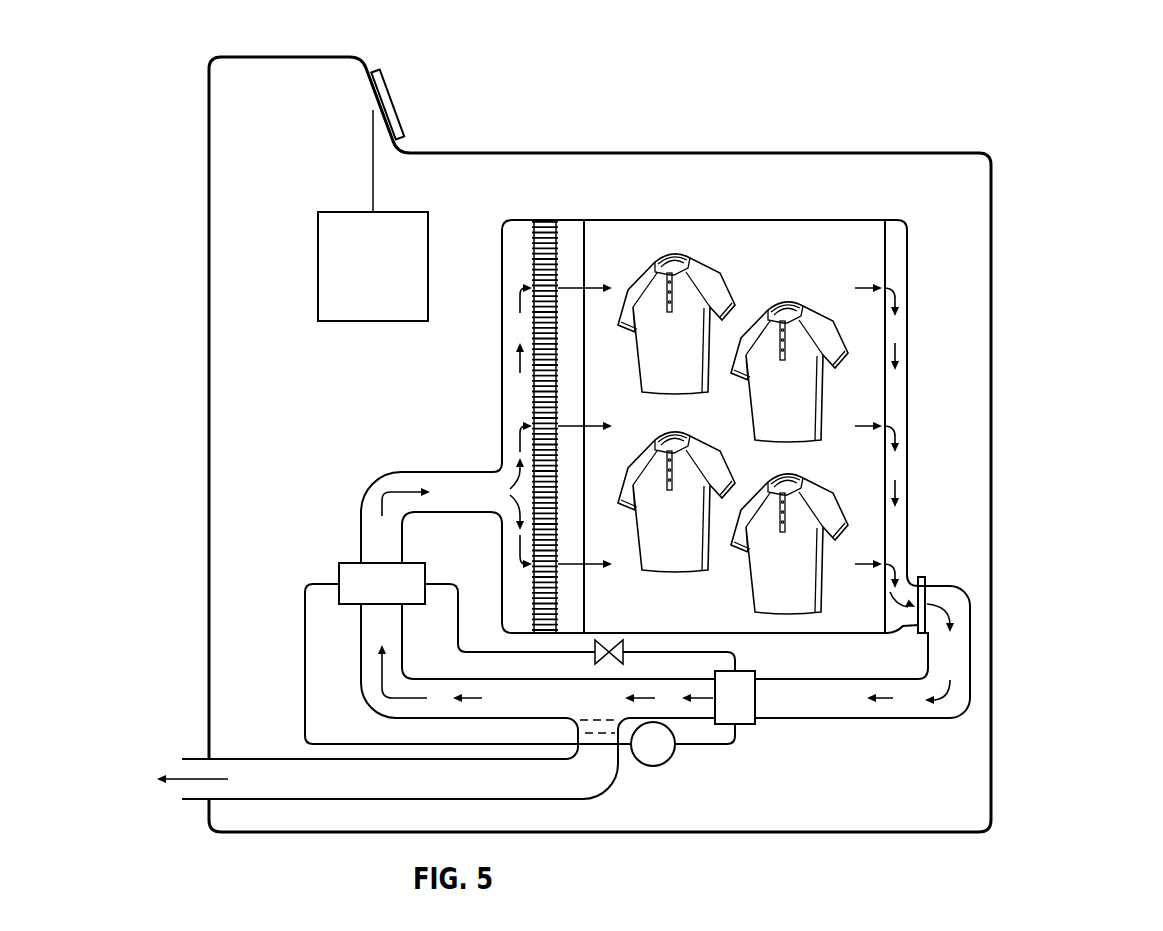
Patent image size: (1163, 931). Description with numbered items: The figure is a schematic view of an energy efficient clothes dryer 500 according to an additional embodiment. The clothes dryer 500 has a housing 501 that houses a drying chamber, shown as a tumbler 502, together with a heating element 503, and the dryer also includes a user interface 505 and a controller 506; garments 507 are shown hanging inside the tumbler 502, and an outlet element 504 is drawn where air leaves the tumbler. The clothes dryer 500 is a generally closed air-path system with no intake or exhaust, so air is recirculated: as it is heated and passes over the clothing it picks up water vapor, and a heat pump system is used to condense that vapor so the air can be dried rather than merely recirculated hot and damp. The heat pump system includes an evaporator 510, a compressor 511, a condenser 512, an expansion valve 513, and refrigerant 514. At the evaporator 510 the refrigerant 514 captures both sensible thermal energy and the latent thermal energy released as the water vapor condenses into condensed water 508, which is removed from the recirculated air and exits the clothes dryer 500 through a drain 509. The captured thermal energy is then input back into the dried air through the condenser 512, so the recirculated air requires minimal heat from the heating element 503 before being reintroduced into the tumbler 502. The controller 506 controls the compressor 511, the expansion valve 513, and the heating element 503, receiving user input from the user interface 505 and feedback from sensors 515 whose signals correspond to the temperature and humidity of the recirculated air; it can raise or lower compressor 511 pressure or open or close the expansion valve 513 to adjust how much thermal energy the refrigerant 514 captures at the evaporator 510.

The clothes dryer 500 is at (1008, 83).
The housing 501 is at (917, 153).
The tumbler 502 is at (797, 220).
The heating element 503 is at (547, 224).
The filter / outlet port 504 is at (922, 578).
The user interface 505 is at (396, 103).
The controller 506 is at (352, 277).
The garments 507 is at (650, 359).
The condensed water 508 is at (600, 720).
The drain 509 is at (198, 759).
The evaporator 510 is at (743, 718).
The compressor 511 is at (667, 752).
The condenser 512 is at (361, 596).
The expansion valve 513 is at (613, 643).
The refrigerant 514 is at (305, 650).
The sensors 515 is at (568, 230).